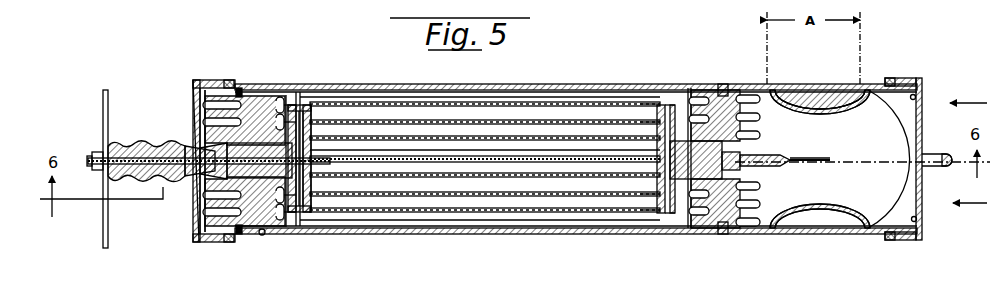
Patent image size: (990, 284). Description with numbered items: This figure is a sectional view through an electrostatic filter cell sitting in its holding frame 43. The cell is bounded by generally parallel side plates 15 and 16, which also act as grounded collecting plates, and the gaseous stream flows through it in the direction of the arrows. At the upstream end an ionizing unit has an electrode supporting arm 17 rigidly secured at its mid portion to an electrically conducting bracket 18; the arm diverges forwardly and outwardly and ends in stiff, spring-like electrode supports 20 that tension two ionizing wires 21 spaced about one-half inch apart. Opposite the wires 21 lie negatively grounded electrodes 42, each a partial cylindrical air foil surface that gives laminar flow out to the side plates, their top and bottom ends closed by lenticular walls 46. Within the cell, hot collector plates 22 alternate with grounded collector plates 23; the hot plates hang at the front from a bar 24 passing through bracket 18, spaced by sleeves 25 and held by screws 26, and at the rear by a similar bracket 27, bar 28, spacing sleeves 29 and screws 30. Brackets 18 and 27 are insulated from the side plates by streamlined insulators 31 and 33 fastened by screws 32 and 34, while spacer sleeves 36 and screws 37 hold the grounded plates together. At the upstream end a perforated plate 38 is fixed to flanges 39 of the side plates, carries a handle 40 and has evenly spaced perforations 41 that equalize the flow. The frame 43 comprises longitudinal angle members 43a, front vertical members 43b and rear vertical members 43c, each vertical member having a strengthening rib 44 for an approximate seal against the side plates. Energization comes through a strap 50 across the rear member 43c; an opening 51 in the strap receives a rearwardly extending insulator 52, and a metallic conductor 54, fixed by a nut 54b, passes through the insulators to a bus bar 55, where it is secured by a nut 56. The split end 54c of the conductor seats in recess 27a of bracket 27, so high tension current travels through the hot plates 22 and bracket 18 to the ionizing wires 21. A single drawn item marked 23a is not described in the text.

The side plate 15 is at (520, 84).
The side plate 16 is at (517, 234).
The electrode supporting arm 17 is at (758, 156).
The electrically conducting bracket 18 is at (656, 167).
The electrode supports 20 is at (818, 163).
The ionizing wires 21 is at (812, 159).
The hot collector plates 22 is at (568, 120).
The grounded collector plates 23 is at (470, 107).
The rod 23a is at (656, 186).
The bar 24 is at (656, 131).
The sleeves 25 is at (656, 112).
The screws 26 is at (661, 105).
The bracket 27 is at (298, 92).
The recess 27a is at (313, 150).
The bar 28 is at (313, 128).
The spacing sleeves 29 is at (313, 110).
The screws 30 is at (307, 105).
The insulators 31 is at (757, 117).
The screws 32 is at (723, 86).
The insulators 33 is at (244, 161).
The screws 34 is at (240, 90).
The spacer sleeves 36 is at (287, 216).
The screws 37 is at (266, 235).
The perforated plate 38 is at (923, 183).
The flanges 39 is at (910, 97).
The handle 40 is at (935, 155).
The perforations 41 is at (915, 96).
The grounded electrodes 42 is at (816, 110).
The holding frame 43 is at (214, 161).
The angle members 43a is at (440, 87).
The vertical members 43b is at (897, 78).
The vertical members 43c is at (205, 80).
The strengthening rib 44 is at (228, 80).
The lenticular walls 46 is at (820, 157).
The strap 50 is at (193, 207).
The opening 51 is at (180, 145).
The rearwardly extending insulator 52 is at (140, 142).
The metallic conductor 54 is at (115, 157).
The nut 54b is at (108, 170).
The split end 54c is at (313, 163).
The bus bar 55 is at (109, 219).
The nut 56 is at (96, 153).